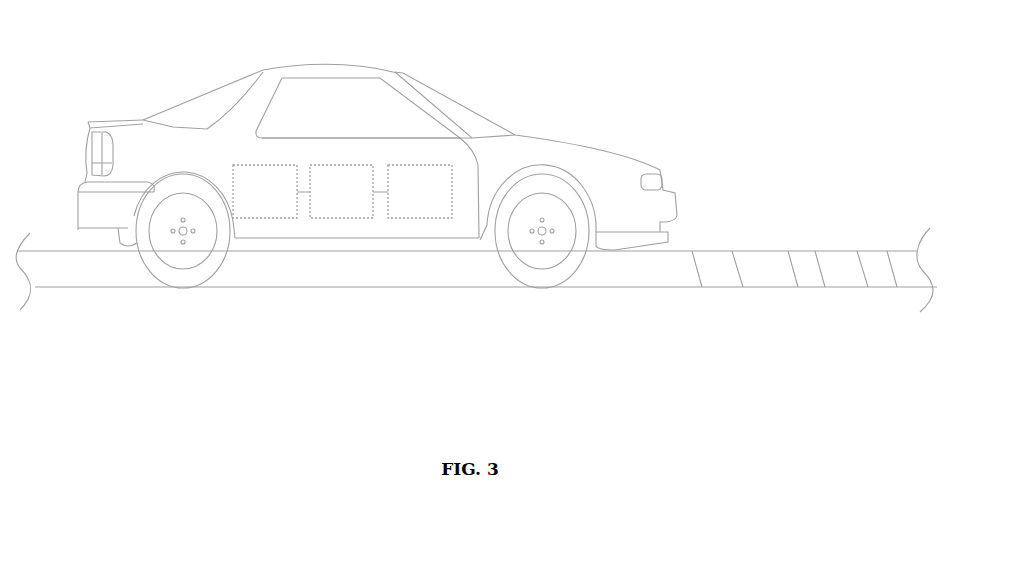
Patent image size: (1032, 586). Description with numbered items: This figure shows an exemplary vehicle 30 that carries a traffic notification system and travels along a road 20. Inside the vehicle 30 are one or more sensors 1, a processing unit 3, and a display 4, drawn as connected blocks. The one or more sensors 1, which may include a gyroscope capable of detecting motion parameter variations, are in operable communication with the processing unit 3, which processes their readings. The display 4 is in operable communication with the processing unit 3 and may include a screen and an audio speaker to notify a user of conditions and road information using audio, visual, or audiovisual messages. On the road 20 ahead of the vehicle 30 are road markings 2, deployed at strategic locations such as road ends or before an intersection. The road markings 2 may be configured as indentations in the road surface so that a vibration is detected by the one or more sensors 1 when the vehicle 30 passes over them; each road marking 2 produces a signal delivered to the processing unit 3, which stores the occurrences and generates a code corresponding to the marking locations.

The vehicle 30 is at (332, 66).
The one or more sensors 1 is at (265, 165).
The processing unit 3 is at (350, 165).
The display 4 is at (430, 165).
The road 20 is at (672, 268).
The road markings 2 is at (735, 263).